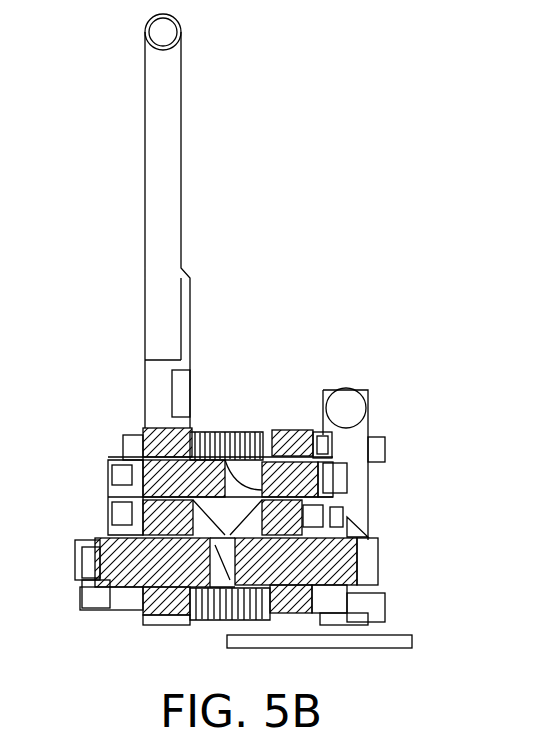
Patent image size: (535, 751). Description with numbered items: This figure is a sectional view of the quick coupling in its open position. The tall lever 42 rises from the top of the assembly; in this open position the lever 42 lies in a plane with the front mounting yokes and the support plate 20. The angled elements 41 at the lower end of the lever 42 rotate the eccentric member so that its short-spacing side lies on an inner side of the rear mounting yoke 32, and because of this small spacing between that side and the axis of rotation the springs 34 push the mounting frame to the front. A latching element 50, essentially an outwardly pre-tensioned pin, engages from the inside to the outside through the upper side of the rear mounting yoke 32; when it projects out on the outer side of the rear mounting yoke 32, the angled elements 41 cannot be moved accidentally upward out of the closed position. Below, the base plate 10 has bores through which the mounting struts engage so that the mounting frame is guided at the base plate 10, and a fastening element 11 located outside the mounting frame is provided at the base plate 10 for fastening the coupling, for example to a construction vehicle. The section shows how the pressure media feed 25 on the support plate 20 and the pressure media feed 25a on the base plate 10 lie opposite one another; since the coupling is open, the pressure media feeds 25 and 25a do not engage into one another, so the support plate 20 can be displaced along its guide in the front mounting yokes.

The base plate 10 is at (282, 428).
The fastening element 11 is at (337, 643).
The support plate 20 is at (110, 517).
The pressure media feed 25 is at (75, 558).
The pressure media feed 25a is at (380, 562).
The rear mounting yoke 32 is at (360, 485).
The springs 34 is at (227, 428).
The angled elements 41 is at (190, 362).
The lever 42 is at (181, 143).
The latching element 50 is at (368, 407).